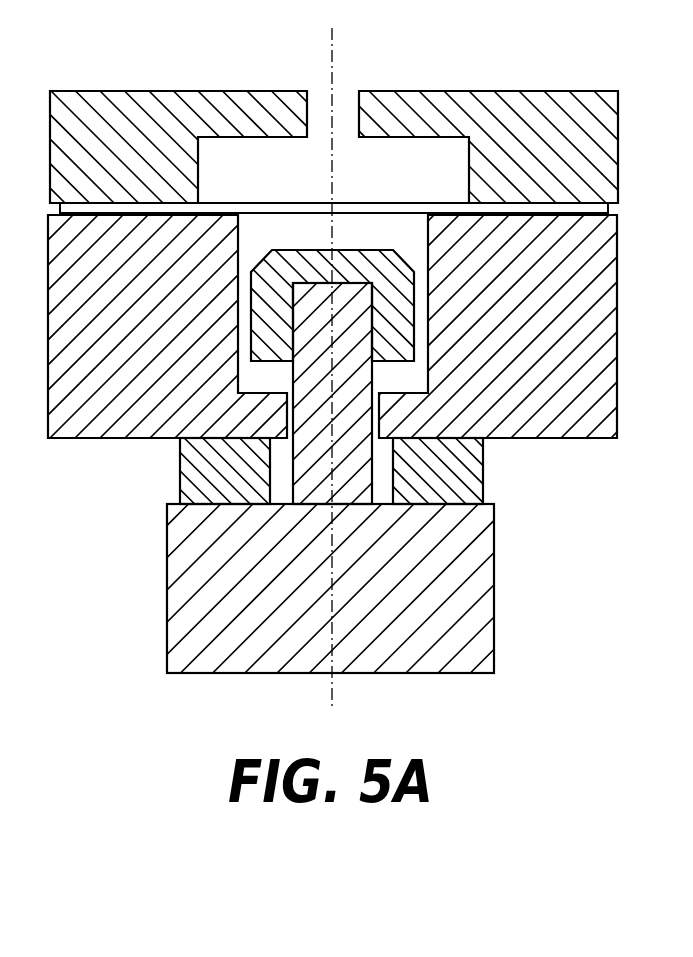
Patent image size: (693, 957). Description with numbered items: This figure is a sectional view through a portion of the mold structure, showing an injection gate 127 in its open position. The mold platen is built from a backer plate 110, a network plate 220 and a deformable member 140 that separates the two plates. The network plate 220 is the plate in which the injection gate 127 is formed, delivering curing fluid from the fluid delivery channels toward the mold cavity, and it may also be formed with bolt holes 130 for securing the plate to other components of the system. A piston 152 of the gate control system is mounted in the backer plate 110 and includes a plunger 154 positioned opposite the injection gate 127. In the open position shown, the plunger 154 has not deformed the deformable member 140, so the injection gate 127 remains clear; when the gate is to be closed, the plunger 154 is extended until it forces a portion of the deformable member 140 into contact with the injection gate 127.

The backer plate 110 is at (542, 420).
The injection gate 127 is at (309, 110).
The bolt holes 130 is at (307, 187).
The deformable member 140 is at (143, 203).
The piston 152 is at (112, 536).
The plunger 154 is at (389, 312).
The network plate 220 is at (530, 118).